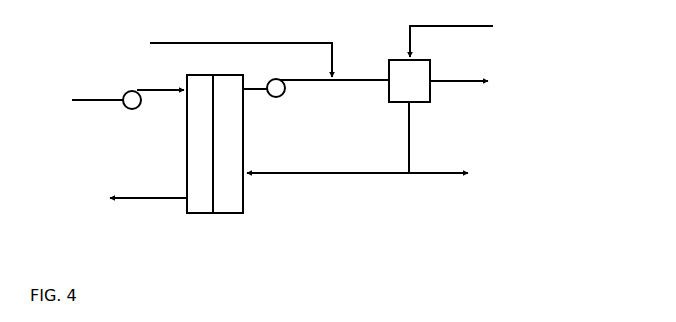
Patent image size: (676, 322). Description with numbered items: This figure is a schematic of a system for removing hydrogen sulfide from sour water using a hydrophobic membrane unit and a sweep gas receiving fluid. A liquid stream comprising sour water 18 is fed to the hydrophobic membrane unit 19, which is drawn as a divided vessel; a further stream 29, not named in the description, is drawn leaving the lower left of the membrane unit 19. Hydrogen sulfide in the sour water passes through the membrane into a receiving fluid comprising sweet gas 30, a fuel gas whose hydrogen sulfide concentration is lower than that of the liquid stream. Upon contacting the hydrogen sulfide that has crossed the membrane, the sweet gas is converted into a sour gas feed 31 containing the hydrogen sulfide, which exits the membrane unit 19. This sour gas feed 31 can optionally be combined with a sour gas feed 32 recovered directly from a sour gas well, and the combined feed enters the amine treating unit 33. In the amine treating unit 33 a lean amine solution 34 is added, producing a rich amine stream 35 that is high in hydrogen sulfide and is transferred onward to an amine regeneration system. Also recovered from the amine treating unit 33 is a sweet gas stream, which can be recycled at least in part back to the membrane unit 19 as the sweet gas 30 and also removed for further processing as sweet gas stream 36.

The sour water liquid stream 18 is at (114, 100).
The hydrophobic membrane unit 19 is at (215, 133).
The bottom outlet stream 29 is at (135, 198).
The sweet gas receiving fluid 30 is at (328, 137).
The sour gas feed 31 is at (316, 79).
The sour gas feed from sour gas well 32 is at (229, 55).
The amine treating unit 33 is at (409, 81).
The lean amine solution 34 is at (464, 37).
The rich amine stream 35 is at (475, 82).
The sweet gas stream 36 is at (453, 175).